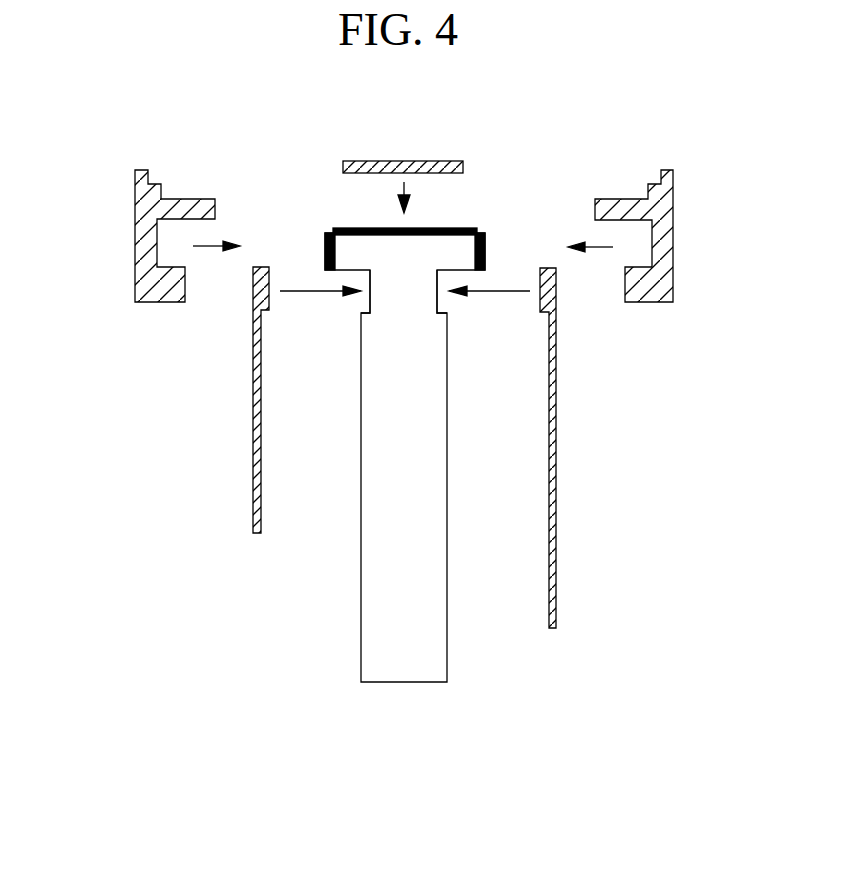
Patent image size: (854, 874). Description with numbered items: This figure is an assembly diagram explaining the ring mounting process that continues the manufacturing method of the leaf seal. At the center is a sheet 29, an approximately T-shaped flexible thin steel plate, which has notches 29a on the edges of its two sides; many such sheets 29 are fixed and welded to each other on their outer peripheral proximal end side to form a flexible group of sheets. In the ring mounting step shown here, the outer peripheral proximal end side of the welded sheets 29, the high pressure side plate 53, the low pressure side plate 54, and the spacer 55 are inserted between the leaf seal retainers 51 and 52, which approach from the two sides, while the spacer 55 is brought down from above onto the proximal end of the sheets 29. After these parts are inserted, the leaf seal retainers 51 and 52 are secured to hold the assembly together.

The sheet 29 is at (408, 665).
The notch 29a is at (370, 302).
The leaf seal retainer 51 is at (665, 235).
The leaf seal retainer 52 is at (138, 234).
The high pressure side plate 53 is at (556, 549).
The low pressure side plate 54 is at (253, 485).
The spacer 55 is at (417, 167).